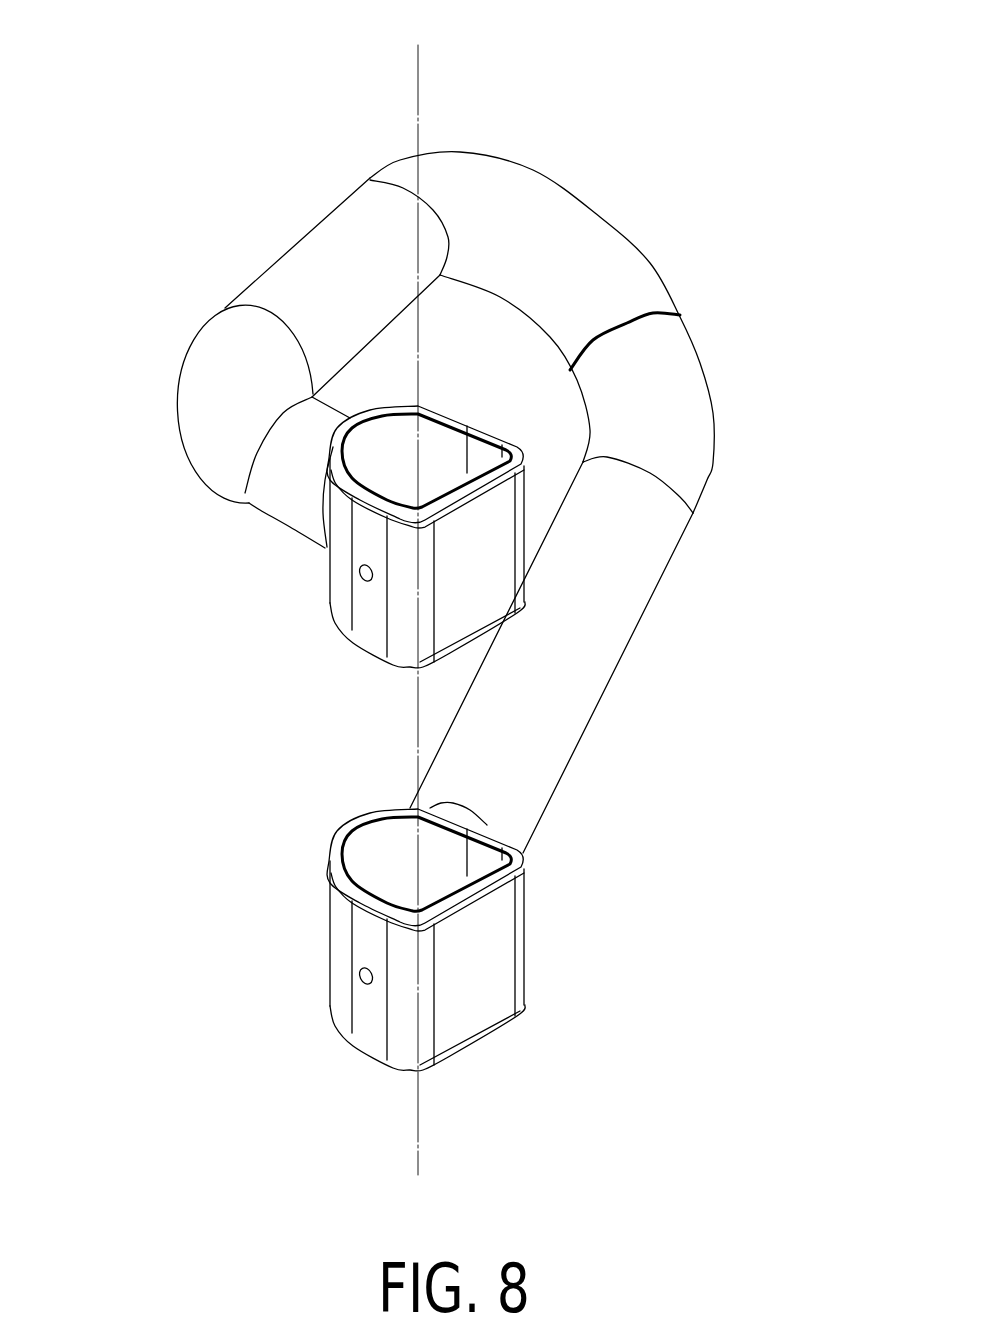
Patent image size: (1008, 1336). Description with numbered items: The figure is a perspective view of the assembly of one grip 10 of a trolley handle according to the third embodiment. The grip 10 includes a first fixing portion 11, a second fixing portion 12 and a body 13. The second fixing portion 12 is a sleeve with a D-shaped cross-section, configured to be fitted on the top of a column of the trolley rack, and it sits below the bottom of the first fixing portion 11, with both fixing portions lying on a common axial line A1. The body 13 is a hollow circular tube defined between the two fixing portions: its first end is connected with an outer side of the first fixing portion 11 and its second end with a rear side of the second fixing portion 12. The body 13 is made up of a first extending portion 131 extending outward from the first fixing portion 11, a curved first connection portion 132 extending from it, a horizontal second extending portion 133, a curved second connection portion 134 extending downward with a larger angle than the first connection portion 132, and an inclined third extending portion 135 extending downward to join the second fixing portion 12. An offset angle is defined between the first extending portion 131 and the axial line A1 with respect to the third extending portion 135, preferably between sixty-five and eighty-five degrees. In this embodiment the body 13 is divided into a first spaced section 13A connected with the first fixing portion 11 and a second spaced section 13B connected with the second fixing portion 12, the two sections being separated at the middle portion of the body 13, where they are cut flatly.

The grip 10 is at (745, 212).
The first fixing portion 11 is at (373, 616).
The second fixing portion 12 is at (370, 1013).
The body 13 is at (732, 378).
The first spaced section 13A is at (248, 285).
The second spaced section 13B is at (673, 558).
The first extending portion 131 is at (287, 485).
The first connection portion 132 is at (235, 379).
The second extending portion 133 is at (327, 250).
The second connection portion 134 is at (558, 227).
The third extending portion 135 is at (563, 678).
The axial line A1 is at (418, 733).